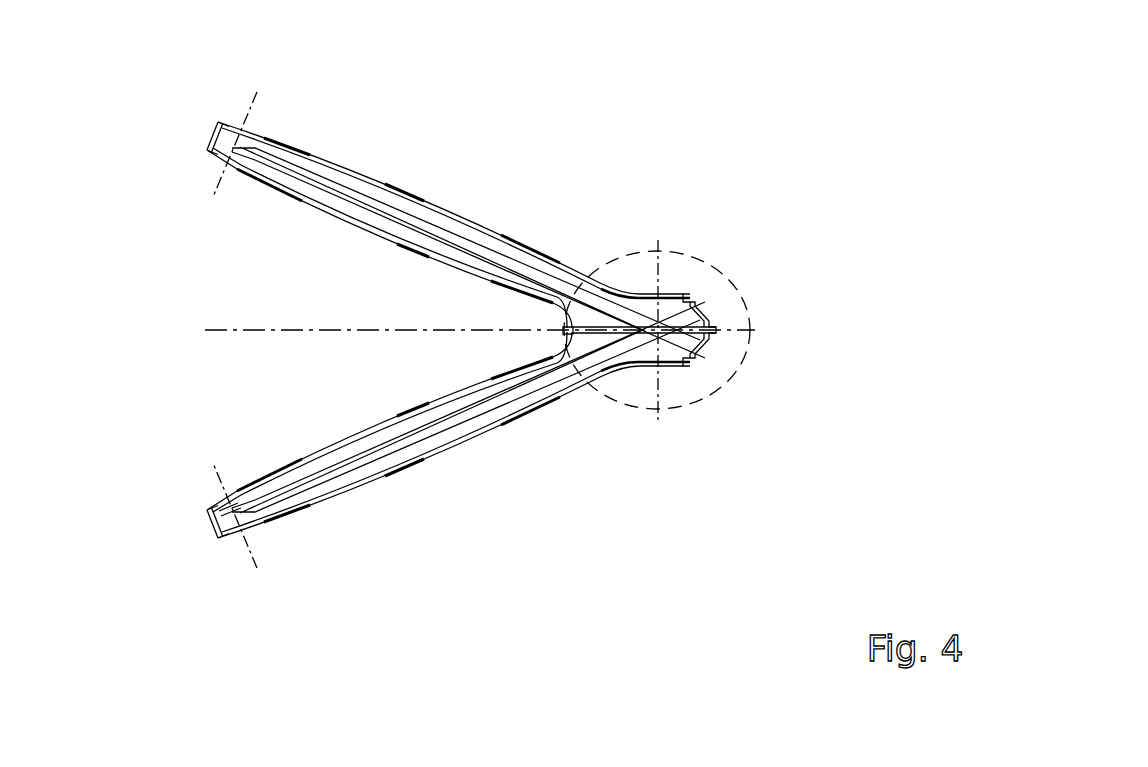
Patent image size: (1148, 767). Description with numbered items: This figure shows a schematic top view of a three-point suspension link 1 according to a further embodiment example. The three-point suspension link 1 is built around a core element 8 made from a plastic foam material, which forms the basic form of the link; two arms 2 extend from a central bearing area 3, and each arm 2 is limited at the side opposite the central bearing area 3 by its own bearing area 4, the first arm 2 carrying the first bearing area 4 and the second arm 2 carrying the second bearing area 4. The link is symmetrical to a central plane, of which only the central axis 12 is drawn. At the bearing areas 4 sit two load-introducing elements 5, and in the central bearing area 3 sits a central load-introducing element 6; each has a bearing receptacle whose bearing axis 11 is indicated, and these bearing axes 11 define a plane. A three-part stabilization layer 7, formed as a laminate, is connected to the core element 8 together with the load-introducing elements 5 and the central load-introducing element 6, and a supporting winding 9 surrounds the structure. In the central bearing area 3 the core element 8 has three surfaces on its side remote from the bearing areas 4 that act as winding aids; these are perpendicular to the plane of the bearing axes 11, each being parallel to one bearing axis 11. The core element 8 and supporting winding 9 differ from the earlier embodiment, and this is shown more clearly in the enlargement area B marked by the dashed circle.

The three-point suspension link 1 is at (730, 143).
The arm 2 is at (478, 200).
The central bearing area 3 is at (678, 383).
The bearing area 4 is at (200, 126).
The load-introducing element 5 is at (227, 118).
The central load-introducing element 6 is at (678, 367).
The stabilization layer 7 is at (548, 272).
The core element 8 is at (392, 207).
The supporting winding 9 is at (228, 518).
The bearing axis 11 is at (257, 97).
The central axis 12 is at (265, 330).
The enlargement area B is at (750, 330).